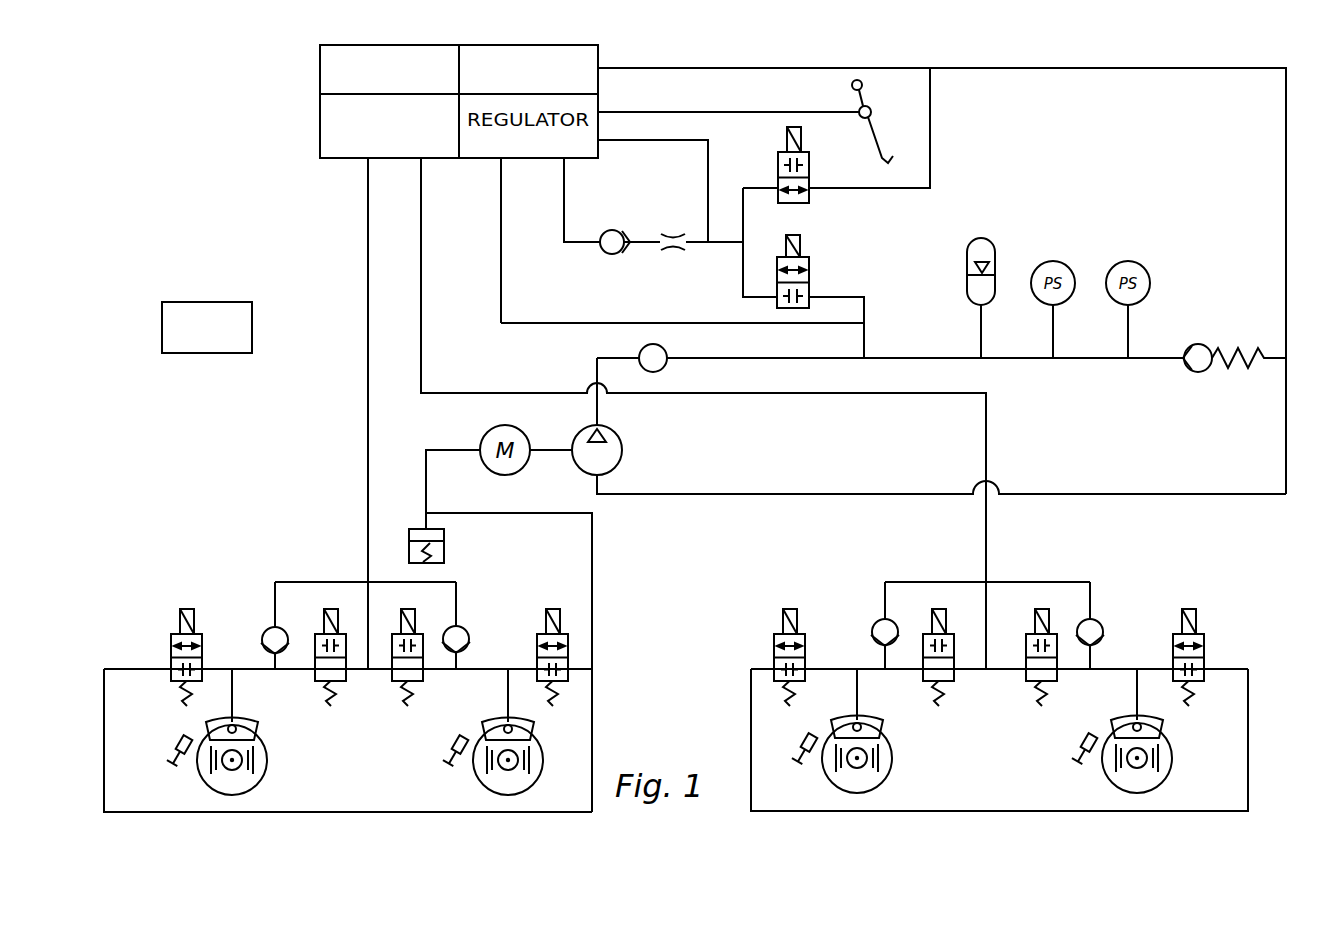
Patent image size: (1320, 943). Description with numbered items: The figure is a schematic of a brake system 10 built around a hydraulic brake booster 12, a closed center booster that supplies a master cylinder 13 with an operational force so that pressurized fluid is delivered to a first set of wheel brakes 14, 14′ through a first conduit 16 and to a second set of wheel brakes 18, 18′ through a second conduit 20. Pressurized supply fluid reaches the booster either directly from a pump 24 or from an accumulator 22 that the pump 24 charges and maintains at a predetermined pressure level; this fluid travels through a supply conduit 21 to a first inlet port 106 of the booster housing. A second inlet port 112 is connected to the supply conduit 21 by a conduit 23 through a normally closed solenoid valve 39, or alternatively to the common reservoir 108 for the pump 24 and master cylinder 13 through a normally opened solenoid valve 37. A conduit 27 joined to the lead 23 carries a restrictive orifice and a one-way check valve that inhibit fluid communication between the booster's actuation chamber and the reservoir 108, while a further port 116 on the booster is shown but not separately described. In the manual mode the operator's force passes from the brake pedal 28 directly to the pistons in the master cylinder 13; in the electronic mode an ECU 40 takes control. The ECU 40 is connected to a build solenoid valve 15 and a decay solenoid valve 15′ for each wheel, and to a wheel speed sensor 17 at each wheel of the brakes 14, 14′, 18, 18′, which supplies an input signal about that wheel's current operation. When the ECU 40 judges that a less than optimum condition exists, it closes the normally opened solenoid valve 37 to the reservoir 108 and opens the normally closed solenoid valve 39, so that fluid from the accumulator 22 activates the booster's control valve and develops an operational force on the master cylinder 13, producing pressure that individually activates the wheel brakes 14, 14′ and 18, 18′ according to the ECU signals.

The brake system 10 is at (285, 421).
The hydraulic brake booster 12 is at (646, 87).
The master cylinder 13 is at (320, 128).
The first set of wheel brakes 14 is at (268, 770).
The first set of wheel brakes 14′ is at (478, 782).
The build solenoid valve 15 is at (315, 640).
The decay solenoid valve 15′ is at (171, 638).
The first conduit 16 is at (368, 488).
The wheel speed sensor 17 is at (176, 740).
The second set of wheel brakes 18 is at (888, 776).
The second set of wheel brakes 18′ is at (1169, 774).
The second conduit 20 is at (421, 262).
The supply conduit 21 is at (545, 323).
The accumulator 22 is at (993, 240).
The conduit 23 is at (742, 260).
The pump 24 is at (628, 462).
The conduit 27 is at (698, 241).
The brake pedal 28 is at (750, 121).
The normally opened solenoid valve 37 is at (810, 266).
The normally closed solenoid valve 39 is at (810, 177).
The ECU 40 is at (203, 301).
The first inlet port 106 is at (501, 166).
The reservoir 108 is at (478, 52).
The second inlet port 112 is at (565, 160).
The line 116 is at (598, 143).